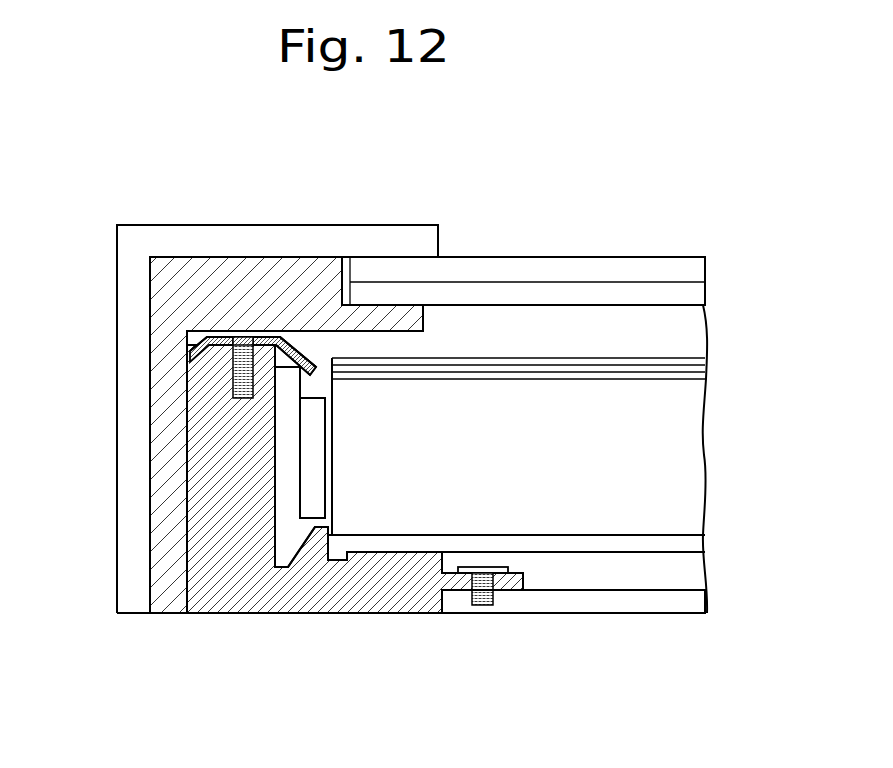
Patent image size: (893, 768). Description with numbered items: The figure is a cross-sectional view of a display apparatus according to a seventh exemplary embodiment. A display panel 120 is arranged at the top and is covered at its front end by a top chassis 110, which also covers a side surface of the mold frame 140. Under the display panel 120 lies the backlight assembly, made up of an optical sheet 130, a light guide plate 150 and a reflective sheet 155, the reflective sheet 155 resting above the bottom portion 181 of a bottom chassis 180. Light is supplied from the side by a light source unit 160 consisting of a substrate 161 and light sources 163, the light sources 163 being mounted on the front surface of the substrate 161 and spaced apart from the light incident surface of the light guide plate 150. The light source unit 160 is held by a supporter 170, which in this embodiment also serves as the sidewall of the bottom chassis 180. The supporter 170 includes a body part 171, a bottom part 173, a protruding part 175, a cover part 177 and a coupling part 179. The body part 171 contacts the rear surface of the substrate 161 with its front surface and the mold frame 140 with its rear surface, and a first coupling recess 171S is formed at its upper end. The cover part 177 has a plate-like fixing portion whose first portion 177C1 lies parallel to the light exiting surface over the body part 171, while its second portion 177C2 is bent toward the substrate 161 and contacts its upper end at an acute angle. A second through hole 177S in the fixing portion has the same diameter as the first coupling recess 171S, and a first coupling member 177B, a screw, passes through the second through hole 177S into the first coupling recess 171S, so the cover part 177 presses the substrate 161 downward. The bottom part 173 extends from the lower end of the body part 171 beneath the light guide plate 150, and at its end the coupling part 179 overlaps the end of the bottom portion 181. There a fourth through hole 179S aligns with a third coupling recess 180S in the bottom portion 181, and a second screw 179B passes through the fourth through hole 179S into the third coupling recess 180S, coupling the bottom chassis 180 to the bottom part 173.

The top chassis 110 is at (125, 566).
The display panel 120 is at (721, 258).
The optical sheet 130 is at (721, 358).
The mold frame 140 is at (168, 284).
The light guide plate 150 is at (690, 452).
The reflective sheet 155 is at (688, 546).
The light source unit 160 is at (308, 683).
The substrate 161 is at (255, 588).
The light sources 163 is at (298, 572).
The supporter 170 is at (184, 515).
The body part 171 is at (215, 470).
The first coupling recess 171S is at (232, 408).
The bottom part 173 is at (383, 580).
The protruding part 175 is at (340, 560).
The cover part 177 is at (186, 343).
The first coupling member 177B is at (223, 392).
The first portion 177C1 is at (263, 336).
The second portion 177C2 is at (292, 338).
The second through hole 177S is at (206, 336).
The coupling part 179 is at (453, 567).
The second screw 179B is at (486, 572).
The fourth through hole 179S is at (470, 582).
The bottom chassis 180 is at (678, 627).
The third coupling recess 180S is at (494, 598).
The bottom portion 181 is at (611, 606).